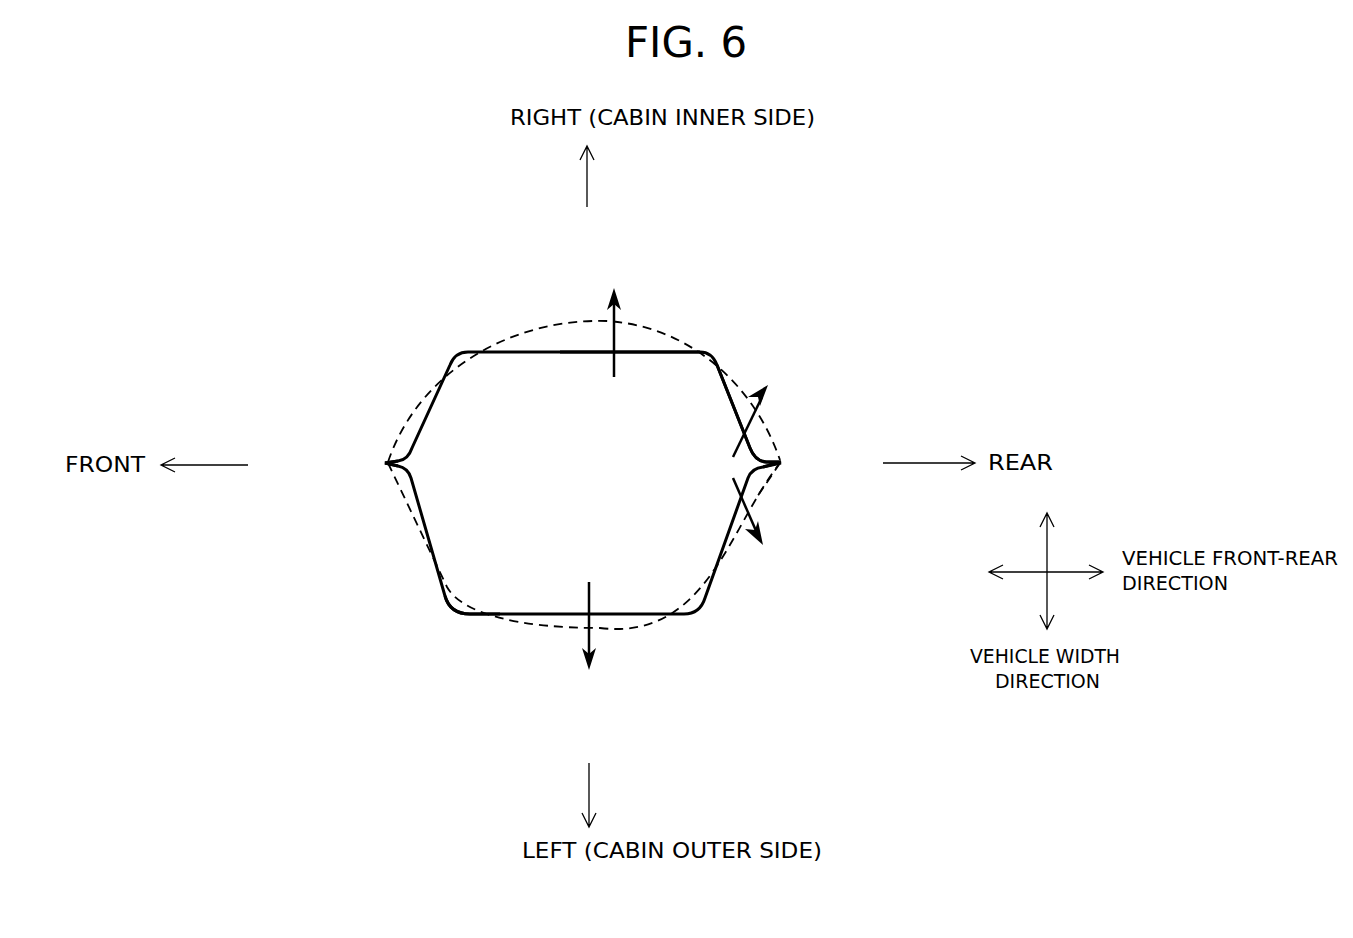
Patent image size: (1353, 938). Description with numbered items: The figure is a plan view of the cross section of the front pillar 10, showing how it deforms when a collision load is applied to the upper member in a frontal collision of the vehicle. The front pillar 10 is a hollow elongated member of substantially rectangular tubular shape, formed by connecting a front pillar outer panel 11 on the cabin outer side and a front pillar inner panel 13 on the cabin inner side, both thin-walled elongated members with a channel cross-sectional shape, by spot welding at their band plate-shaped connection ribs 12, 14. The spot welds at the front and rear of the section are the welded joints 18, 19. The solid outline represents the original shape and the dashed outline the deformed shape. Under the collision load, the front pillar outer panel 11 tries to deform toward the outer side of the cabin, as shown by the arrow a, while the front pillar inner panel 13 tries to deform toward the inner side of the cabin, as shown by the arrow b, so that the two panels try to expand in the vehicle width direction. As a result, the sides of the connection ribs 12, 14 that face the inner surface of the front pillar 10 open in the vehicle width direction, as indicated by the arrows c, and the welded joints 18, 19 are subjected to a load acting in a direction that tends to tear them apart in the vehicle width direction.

The front pillar 10 is at (357, 607).
The front pillar outer panel 11 is at (472, 618).
The connection rib 12 is at (768, 488).
The front pillar inner panel 13 is at (660, 352).
The connection rib 14 is at (768, 455).
The welded joint 18 is at (373, 464).
The welded joint 19 is at (788, 462).
The arrow a is at (585, 640).
The arrow b is at (622, 314).
The arrows c is at (753, 387).